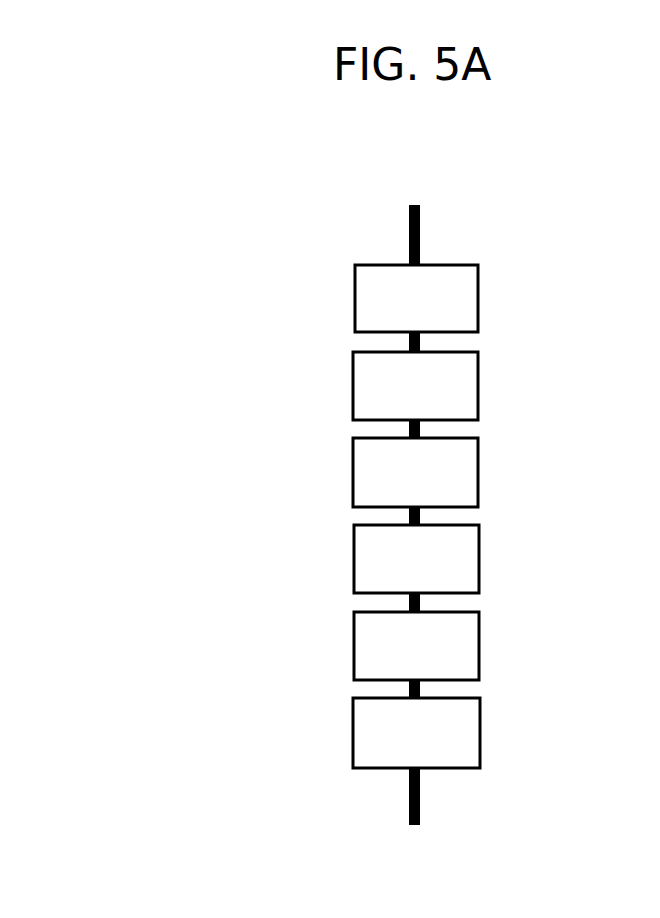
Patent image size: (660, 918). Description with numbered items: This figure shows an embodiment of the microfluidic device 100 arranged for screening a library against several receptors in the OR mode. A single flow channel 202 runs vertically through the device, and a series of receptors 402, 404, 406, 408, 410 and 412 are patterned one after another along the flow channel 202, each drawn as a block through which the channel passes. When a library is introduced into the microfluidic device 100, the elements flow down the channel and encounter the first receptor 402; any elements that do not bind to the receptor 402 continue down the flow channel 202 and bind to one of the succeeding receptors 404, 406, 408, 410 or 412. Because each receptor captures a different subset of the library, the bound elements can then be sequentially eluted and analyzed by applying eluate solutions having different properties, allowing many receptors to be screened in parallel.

The microfluidic device 100 is at (520, 194).
The flow channel 202 is at (408, 240).
The receptor 402 is at (447, 300).
The receptor 404 is at (413, 392).
The receptor 406 is at (437, 473).
The receptor 408 is at (368, 566).
The receptor 410 is at (450, 647).
The receptor 412 is at (380, 730).